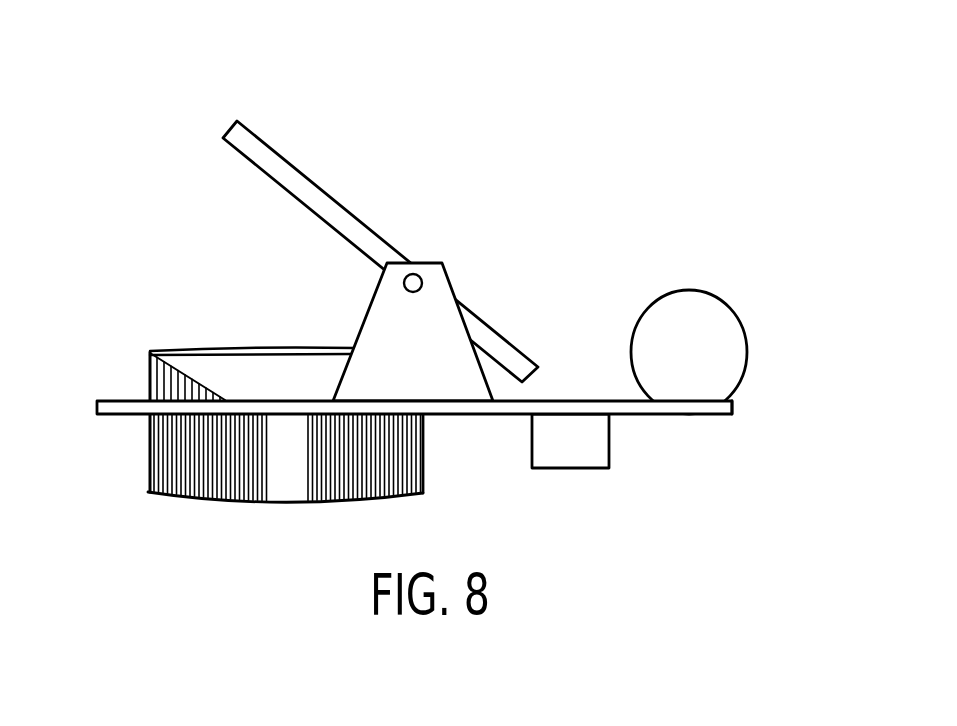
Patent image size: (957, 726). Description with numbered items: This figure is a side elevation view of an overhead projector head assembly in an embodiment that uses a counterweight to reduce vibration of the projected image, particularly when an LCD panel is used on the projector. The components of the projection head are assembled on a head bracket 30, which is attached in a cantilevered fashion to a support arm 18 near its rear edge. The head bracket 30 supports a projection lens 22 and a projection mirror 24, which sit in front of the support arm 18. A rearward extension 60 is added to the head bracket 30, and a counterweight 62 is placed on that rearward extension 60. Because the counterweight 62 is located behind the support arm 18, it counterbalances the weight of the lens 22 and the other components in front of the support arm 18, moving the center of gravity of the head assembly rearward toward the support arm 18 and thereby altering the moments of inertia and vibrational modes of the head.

The support arm 18 is at (580, 468).
The projection lens 22 is at (200, 497).
The projection mirror 24 is at (297, 163).
The head bracket 30 is at (110, 417).
The rearward extension 60 is at (723, 413).
The counterweight 62 is at (727, 302).